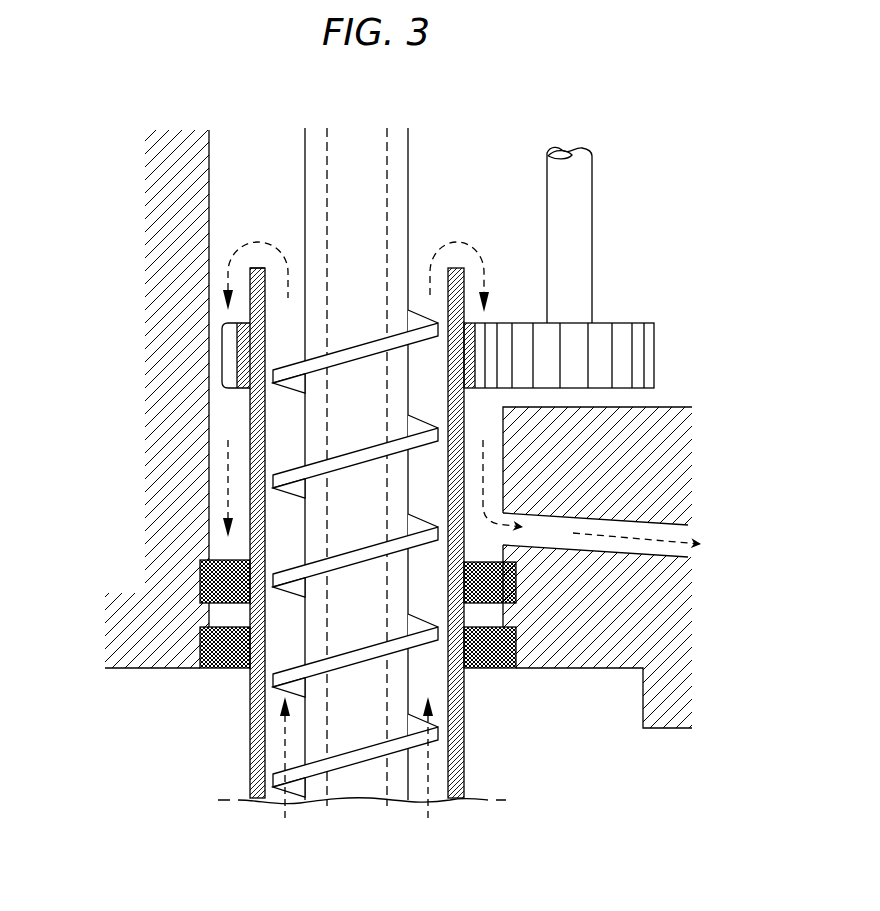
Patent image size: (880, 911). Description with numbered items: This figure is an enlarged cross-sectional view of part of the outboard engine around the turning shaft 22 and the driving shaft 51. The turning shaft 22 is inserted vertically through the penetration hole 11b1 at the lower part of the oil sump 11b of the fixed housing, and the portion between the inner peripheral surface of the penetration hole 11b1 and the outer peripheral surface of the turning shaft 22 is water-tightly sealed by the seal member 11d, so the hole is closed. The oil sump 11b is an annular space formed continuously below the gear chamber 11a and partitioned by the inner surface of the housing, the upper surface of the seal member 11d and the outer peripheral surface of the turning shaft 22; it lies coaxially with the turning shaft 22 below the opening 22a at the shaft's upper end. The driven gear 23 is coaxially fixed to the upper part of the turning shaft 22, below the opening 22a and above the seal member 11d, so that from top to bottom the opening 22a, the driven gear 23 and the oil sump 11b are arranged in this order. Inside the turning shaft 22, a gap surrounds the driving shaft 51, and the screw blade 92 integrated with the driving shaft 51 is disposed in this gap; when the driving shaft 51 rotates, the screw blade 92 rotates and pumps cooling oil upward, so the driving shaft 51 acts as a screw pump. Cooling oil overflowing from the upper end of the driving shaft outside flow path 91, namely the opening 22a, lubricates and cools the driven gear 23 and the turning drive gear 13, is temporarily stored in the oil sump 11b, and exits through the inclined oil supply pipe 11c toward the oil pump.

The gear chamber 11a is at (209, 230).
The oil sump 11b is at (209, 424).
The penetration hole 11b1 is at (207, 612).
The oil supply pipe 11c is at (645, 522).
The seal member 11d is at (516, 583).
The turning drive gear 13 is at (654, 357).
The turning shaft 22 is at (250, 742).
The opening 22a is at (266, 283).
The driven gear 23 is at (222, 352).
The driving shaft 51 is at (408, 200).
The driving shaft outside flow path 91 is at (455, 695).
The screw blade 92 is at (355, 786).